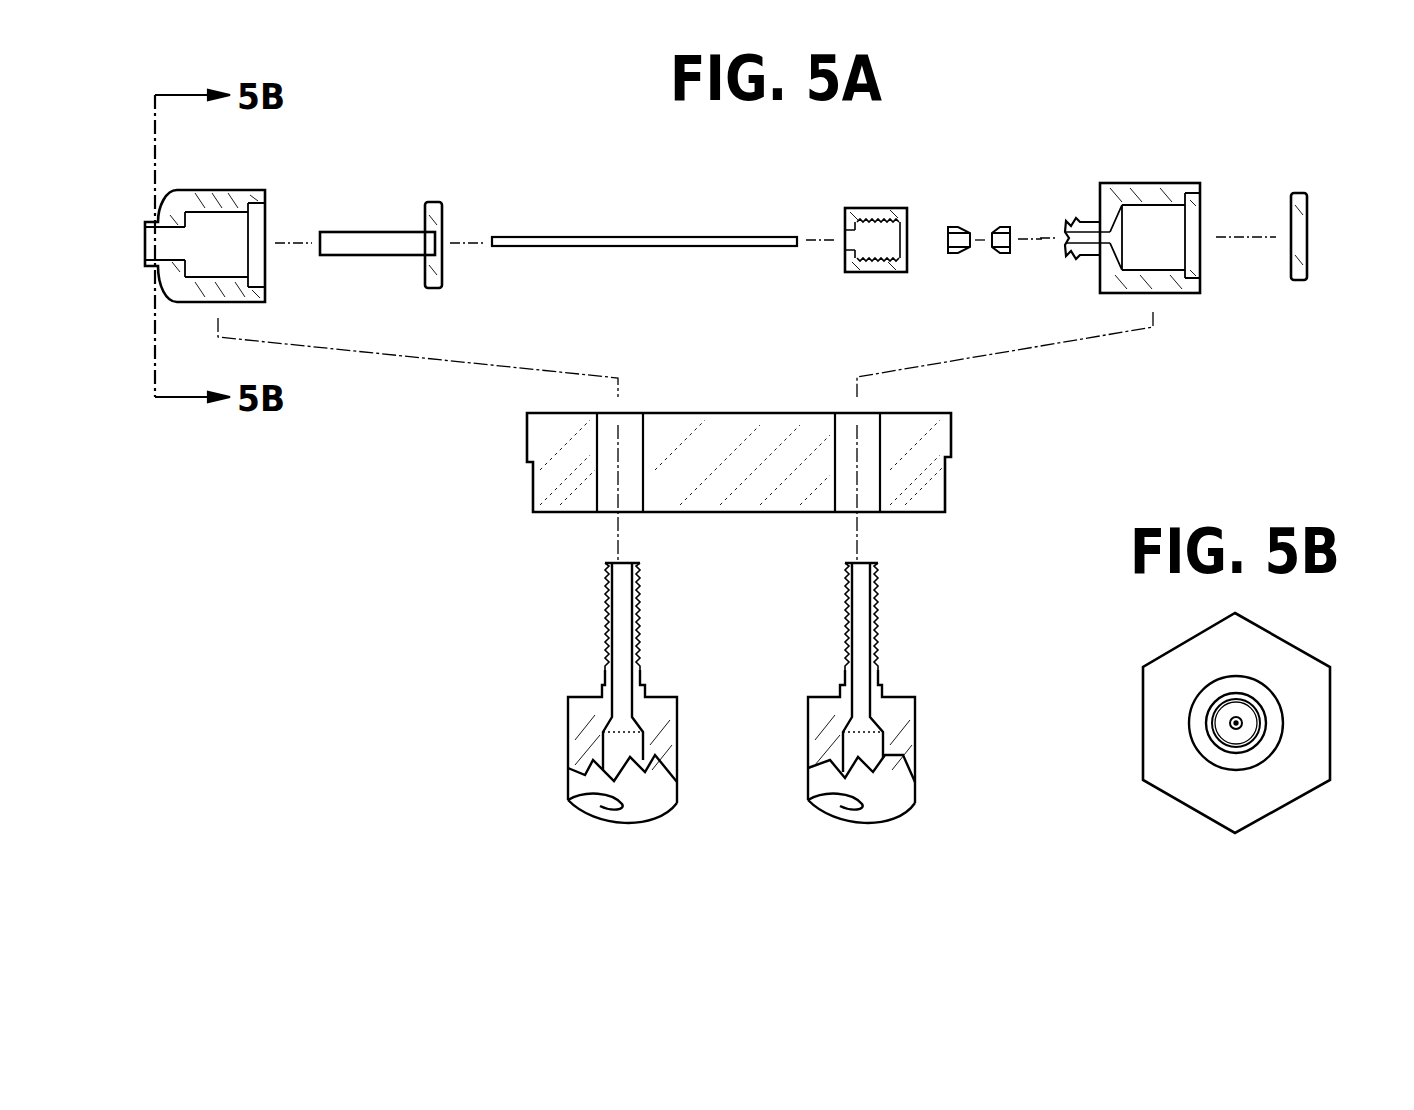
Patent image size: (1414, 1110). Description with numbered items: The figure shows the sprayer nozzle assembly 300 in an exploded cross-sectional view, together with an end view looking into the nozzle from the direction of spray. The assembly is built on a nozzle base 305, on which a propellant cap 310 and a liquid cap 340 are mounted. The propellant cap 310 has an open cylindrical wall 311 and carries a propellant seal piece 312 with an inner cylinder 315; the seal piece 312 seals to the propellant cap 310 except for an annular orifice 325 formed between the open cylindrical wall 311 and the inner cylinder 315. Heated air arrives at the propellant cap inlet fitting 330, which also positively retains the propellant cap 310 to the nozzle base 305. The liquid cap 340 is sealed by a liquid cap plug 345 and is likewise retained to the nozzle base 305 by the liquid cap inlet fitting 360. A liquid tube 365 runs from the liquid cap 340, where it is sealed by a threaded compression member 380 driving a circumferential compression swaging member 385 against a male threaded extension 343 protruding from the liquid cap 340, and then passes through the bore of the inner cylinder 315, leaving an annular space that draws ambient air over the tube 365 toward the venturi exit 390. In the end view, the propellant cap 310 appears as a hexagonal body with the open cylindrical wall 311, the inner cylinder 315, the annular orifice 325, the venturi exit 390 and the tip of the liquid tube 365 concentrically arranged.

In FIG. 5A, the nozzle assembly 300 is at (394, 457).
In FIG. 5A, the nozzle base 305 is at (740, 514).
In FIG. 5A, the propellant cap 310 is at (210, 187).
In FIG. 5B, the propellant cap 310 is at (1282, 638).
In FIG. 5B, the open cylindrical wall 311 is at (1213, 695).
In FIG. 5A, the propellant seal piece 312 is at (445, 204).
In FIG. 5A, the inner cylinder 315 is at (371, 230).
In FIG. 5B, the inner cylinder 315 is at (1263, 710).
In FIG. 5B, the annular orifice 325 is at (1262, 724).
In FIG. 5A, the propellant cap inlet fitting 330 is at (568, 745).
In FIG. 5A, the liquid cap 340 is at (1128, 182).
In FIG. 5A, the male threaded extension 343 is at (1093, 255).
In FIG. 5A, the liquid cap plug 345 is at (1298, 192).
In FIG. 5A, the liquid cap inlet fitting 360 is at (918, 725).
In FIG. 5A, the liquid tube 365 is at (624, 236).
In FIG. 5B, the liquid tube 365 is at (1243, 747).
In FIG. 5A, the threaded compression member 380 is at (880, 207).
In FIG. 5A, the circumferential compression swaging member 385 is at (961, 226).
In FIG. 5B, the venturi exit 390 is at (1227, 733).